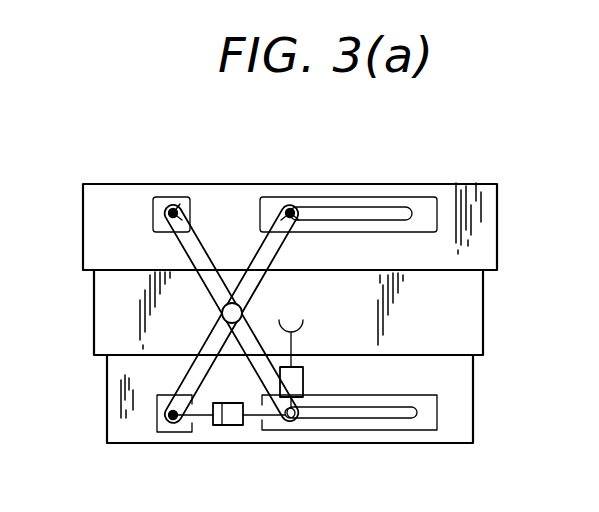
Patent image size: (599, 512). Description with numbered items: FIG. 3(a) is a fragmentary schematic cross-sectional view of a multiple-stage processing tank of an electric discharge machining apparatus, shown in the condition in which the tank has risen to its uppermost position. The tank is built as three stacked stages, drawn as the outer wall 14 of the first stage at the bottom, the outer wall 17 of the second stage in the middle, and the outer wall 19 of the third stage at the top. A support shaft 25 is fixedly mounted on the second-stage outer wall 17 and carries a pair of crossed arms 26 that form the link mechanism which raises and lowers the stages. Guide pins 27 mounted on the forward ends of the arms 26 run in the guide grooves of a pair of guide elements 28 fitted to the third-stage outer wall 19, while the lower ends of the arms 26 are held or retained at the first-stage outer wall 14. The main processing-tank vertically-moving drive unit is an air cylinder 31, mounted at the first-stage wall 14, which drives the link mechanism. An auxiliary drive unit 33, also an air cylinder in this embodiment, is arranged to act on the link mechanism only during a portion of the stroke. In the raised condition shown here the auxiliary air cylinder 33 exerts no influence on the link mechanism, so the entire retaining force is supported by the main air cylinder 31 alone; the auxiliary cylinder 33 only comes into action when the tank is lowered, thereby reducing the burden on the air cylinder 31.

The outer wall of the first stage 14 is at (465, 414).
The outer wall of the second stage 17 is at (483, 328).
The outer wall of the third stage 19 is at (485, 249).
The support shaft 25 is at (221, 312).
The arms 26 is at (186, 249).
The guide pins 27 is at (291, 212).
The guide elements 28 is at (427, 200).
The air cylinder 31 is at (233, 425).
The auxiliary drive unit 33 is at (303, 388).